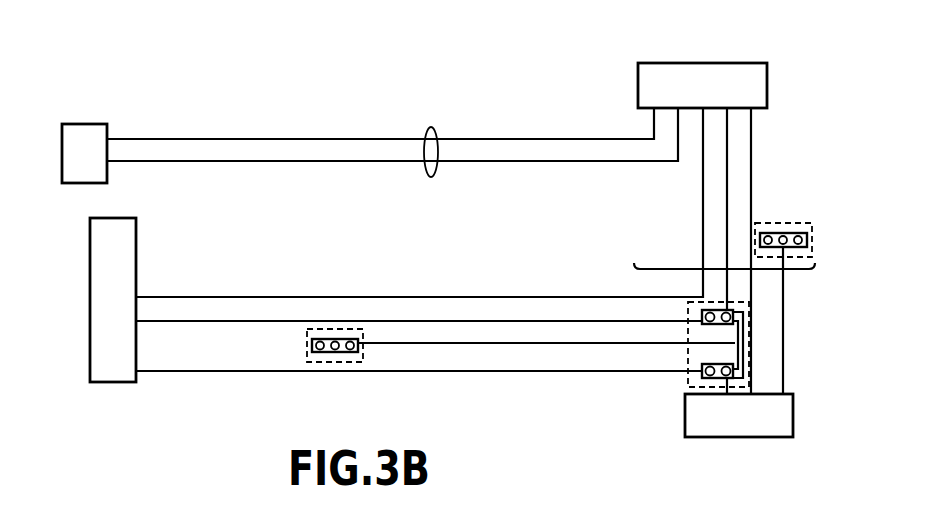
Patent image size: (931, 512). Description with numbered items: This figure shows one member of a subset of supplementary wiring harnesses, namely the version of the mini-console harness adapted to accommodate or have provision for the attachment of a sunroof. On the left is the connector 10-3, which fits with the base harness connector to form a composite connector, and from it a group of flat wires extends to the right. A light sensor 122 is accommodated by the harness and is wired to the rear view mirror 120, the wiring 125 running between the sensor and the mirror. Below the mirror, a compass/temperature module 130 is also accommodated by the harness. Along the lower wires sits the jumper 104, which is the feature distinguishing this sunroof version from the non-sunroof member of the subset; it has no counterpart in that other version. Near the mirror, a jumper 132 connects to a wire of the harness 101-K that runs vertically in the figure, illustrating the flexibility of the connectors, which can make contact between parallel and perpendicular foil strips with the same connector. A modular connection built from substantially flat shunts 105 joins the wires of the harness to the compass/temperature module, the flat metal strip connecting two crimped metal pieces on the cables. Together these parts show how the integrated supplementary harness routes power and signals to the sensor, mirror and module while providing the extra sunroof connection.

The light sensor 122 is at (107, 127).
The rear view mirror 120 is at (648, 62).
The wiring from sensor to mirror 125 is at (432, 128).
The connector 10-3 is at (137, 245).
The jumper 104 is at (331, 363).
The jumper 132 is at (783, 222).
The wiring harness 101-K is at (752, 269).
The flat shunt 105 is at (727, 330).
The compass/temperature module 130 is at (793, 408).